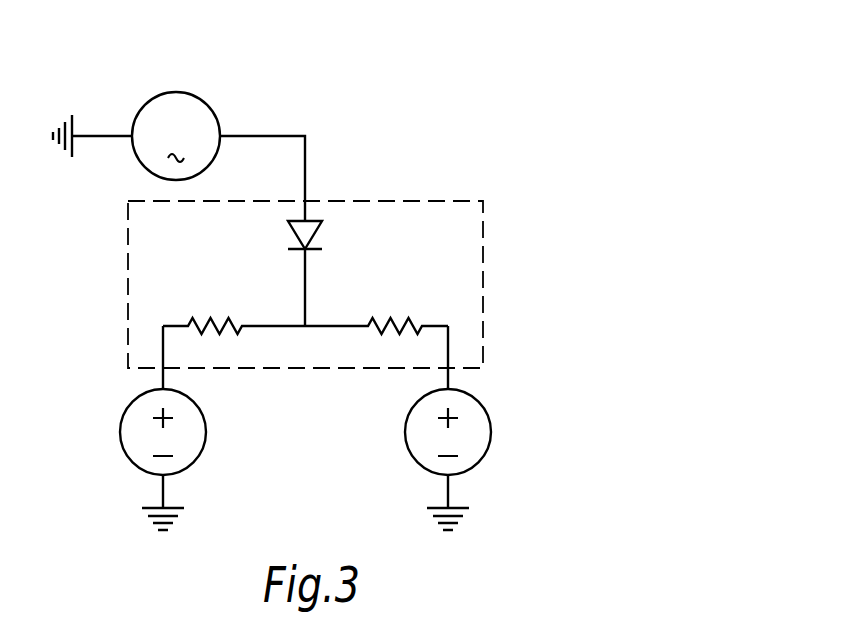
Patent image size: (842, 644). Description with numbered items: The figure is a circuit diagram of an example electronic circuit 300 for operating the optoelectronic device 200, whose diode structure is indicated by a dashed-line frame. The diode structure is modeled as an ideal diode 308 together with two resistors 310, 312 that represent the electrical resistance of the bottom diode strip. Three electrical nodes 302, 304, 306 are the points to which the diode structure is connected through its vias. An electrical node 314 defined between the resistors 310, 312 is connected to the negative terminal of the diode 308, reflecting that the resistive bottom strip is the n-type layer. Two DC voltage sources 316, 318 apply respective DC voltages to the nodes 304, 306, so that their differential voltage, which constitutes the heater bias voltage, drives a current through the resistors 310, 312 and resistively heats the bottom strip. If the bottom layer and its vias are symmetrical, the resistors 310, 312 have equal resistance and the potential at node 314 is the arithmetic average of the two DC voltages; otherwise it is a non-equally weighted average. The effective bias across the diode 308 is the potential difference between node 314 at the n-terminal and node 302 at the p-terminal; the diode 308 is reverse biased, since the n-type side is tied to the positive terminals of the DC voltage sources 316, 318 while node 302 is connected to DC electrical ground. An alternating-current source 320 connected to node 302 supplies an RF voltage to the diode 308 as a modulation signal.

The electronic circuit 300 is at (578, 51).
The optoelectronic device 200 is at (394, 199).
The electrical node 302 is at (262, 135).
The electrical node 304 is at (161, 341).
The electrical node 306 is at (450, 345).
The ideal diode 308 is at (290, 232).
The resistor 310 is at (220, 319).
The resistor 312 is at (399, 320).
The electrical node 314 is at (308, 290).
The DC voltage source 316 is at (207, 428).
The DC voltage source 318 is at (403, 428).
The alternating-current source 320 is at (176, 90).